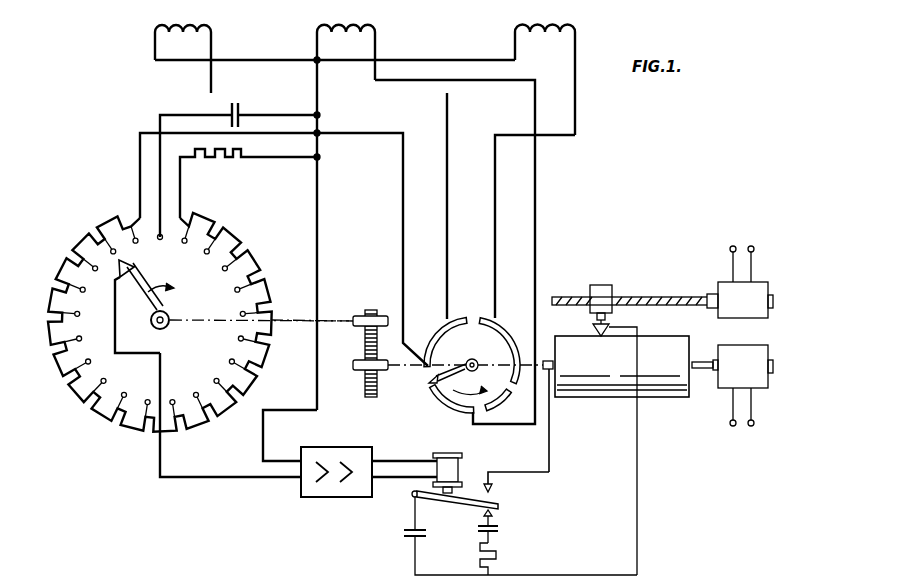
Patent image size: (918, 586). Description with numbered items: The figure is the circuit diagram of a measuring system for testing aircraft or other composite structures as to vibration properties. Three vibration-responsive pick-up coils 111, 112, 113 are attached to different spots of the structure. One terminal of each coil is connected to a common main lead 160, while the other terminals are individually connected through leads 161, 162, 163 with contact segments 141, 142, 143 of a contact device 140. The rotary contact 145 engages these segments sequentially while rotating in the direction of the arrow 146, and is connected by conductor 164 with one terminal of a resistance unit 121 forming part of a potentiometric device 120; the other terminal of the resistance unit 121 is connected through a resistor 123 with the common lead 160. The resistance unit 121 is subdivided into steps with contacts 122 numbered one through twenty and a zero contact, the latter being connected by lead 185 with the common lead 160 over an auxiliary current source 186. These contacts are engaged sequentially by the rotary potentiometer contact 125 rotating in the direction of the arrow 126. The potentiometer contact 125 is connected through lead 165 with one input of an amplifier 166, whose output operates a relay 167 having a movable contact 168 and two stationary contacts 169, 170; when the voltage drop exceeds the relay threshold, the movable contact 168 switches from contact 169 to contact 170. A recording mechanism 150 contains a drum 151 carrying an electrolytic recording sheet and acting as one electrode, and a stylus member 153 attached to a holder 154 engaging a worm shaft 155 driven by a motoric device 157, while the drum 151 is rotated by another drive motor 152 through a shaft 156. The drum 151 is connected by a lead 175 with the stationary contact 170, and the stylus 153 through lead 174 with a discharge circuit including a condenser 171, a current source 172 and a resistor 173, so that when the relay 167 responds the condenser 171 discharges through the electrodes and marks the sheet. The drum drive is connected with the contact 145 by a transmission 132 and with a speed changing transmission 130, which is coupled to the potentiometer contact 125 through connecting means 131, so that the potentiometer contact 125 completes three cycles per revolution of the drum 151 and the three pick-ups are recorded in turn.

The pick-up coil 111 is at (156, 30).
The pick-up coil 112 is at (365, 32).
The pick-up coil 113 is at (570, 27).
The potentiometric device 120 is at (62, 256).
The resistance unit 121 is at (62, 393).
The switch terminals 122 is at (82, 290).
The resistor 123 is at (240, 162).
The rotary potentiometer contact 125 is at (126, 249).
The arrow 126 is at (172, 292).
The speed changing transmission 130 is at (370, 309).
The coupling means 131 is at (292, 318).
The transmission 132 is at (546, 359).
The contact device 140 is at (446, 416).
The contact segment 141 is at (437, 332).
The contact segment 142 is at (461, 410).
The contact segment 143 is at (504, 334).
The rotary contact 145 is at (432, 375).
The arrow 146 is at (497, 394).
The recording mechanism 150 is at (646, 280).
The drum 151 is at (658, 386).
The drive motor 152 is at (756, 380).
The stylus member 153 is at (606, 326).
The holder 154 is at (600, 284).
The worm shaft 155 is at (666, 297).
The shaft 156 is at (698, 360).
The motoric device 157 is at (718, 282).
The common main lead 160 is at (265, 59).
The lead 161 is at (376, 93).
The lead 162 is at (534, 107).
The lead 163 is at (578, 103).
The conductor 164 is at (402, 196).
The lead 165 is at (158, 460).
The amplifier 166 is at (331, 451).
The relay 167 is at (461, 466).
The movable contact 168 is at (500, 508).
The stationary contact 169 is at (483, 514).
The stationary contact 170 is at (497, 490).
The condenser 171 is at (402, 534).
The current source 172 is at (500, 529).
The resistor 173 is at (498, 557).
The lead 174 is at (639, 462).
The lead 175 is at (551, 445).
The lead 185 is at (165, 112).
The auxiliary current source 186 is at (230, 110).